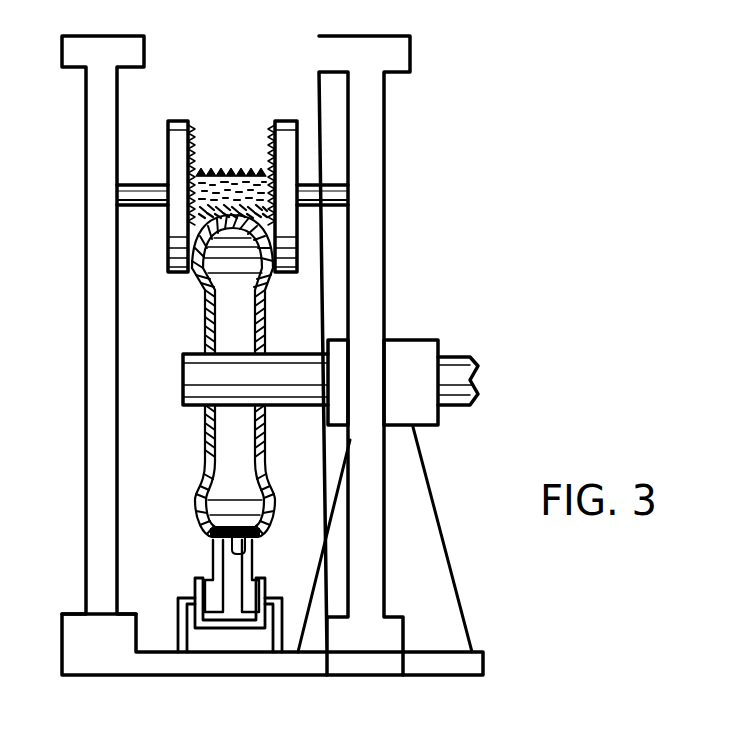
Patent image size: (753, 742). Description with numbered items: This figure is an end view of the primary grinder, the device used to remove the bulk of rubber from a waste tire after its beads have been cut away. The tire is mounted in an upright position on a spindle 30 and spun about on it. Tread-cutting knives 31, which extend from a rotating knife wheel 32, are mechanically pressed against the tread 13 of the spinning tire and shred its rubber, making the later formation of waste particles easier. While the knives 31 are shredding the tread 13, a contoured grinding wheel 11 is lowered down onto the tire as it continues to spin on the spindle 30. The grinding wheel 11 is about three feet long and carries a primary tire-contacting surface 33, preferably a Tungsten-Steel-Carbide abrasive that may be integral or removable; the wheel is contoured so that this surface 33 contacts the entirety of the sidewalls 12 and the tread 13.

The contoured grinding wheel 11 is at (168, 132).
The sidewalls 12 is at (193, 267).
The tread 13 is at (240, 555).
The spindle 30 is at (412, 345).
The tread-cutting knives 31 is at (213, 559).
The knife wheel 32 is at (227, 630).
The primary tire-contacting surface 33 is at (270, 163).